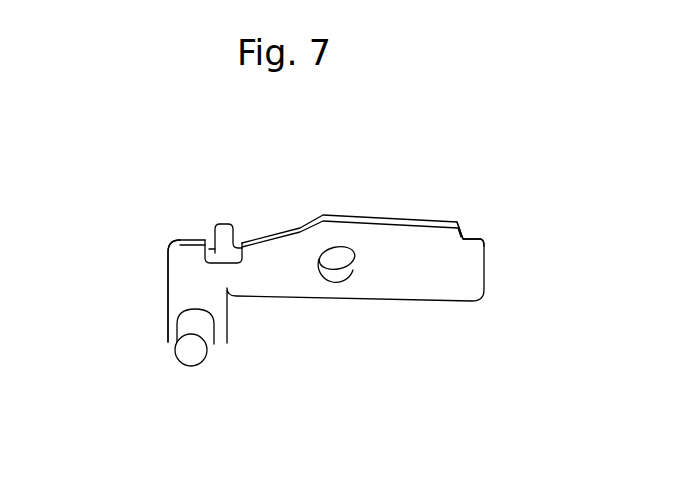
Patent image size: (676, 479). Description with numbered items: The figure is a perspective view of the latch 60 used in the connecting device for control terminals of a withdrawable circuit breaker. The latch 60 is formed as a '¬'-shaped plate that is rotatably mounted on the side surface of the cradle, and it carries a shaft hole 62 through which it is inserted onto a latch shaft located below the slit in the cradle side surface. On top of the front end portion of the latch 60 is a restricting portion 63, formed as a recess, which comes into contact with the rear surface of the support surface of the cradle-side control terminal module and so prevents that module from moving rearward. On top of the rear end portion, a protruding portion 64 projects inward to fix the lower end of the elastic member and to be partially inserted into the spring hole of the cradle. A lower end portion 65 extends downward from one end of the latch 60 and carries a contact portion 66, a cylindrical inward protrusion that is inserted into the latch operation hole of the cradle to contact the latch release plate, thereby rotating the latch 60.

The latch 60 is at (405, 262).
The shaft hole 62 is at (328, 275).
The restricting portion 63 is at (472, 237).
The protruding portion 64 is at (222, 250).
The lower end portion 65 is at (176, 321).
The contact portion 66 is at (190, 352).